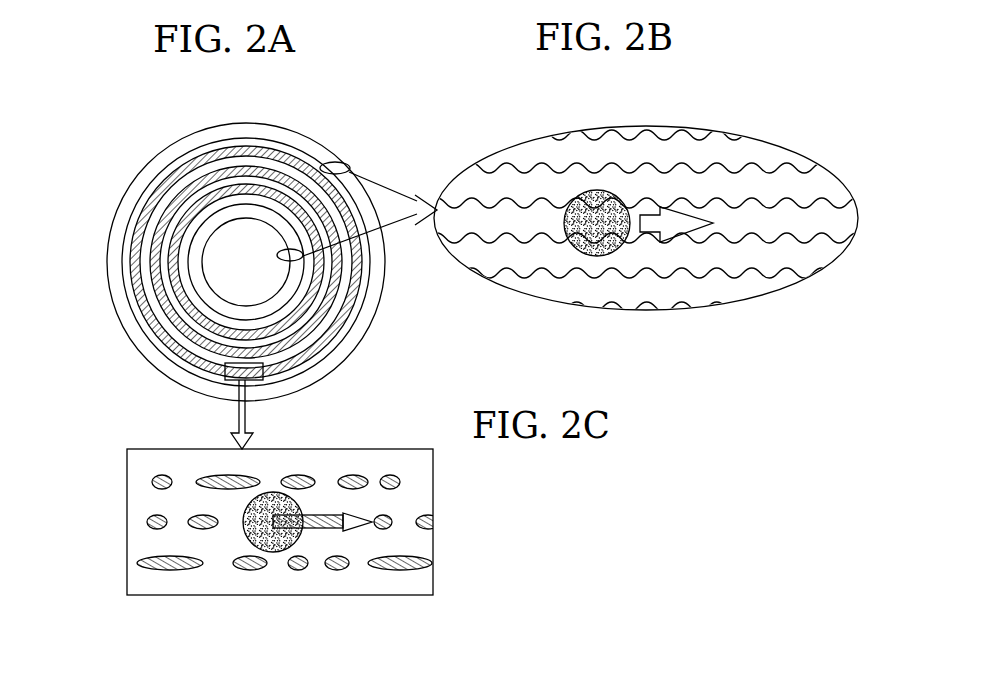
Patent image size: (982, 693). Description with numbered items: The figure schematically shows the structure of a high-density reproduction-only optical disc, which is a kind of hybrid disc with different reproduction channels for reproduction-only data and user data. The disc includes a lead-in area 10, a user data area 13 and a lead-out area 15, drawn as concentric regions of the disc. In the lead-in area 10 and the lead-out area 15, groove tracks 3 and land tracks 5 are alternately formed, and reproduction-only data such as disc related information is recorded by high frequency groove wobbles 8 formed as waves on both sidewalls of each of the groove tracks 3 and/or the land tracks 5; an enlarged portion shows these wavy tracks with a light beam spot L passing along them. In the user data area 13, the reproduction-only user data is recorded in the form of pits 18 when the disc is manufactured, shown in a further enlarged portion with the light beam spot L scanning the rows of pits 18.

In FIG. 2A, the lead-in area 10 is at (247, 206).
In FIG. 2A, the user data area 13 is at (122, 255).
In FIG. 2A, the lead-out area 15 is at (203, 129).
In FIG. 2B, the groove tracks 3 is at (770, 152).
In FIG. 2B, the land tracks 5 is at (822, 182).
In FIG. 2B, the high frequency groove wobbles 8 is at (667, 167).
In FIG. 2B, the light beam spot L is at (593, 190).
In FIG. 2C, the light beam spot L is at (273, 552).
In FIG. 2C, the pits 18 is at (430, 514).